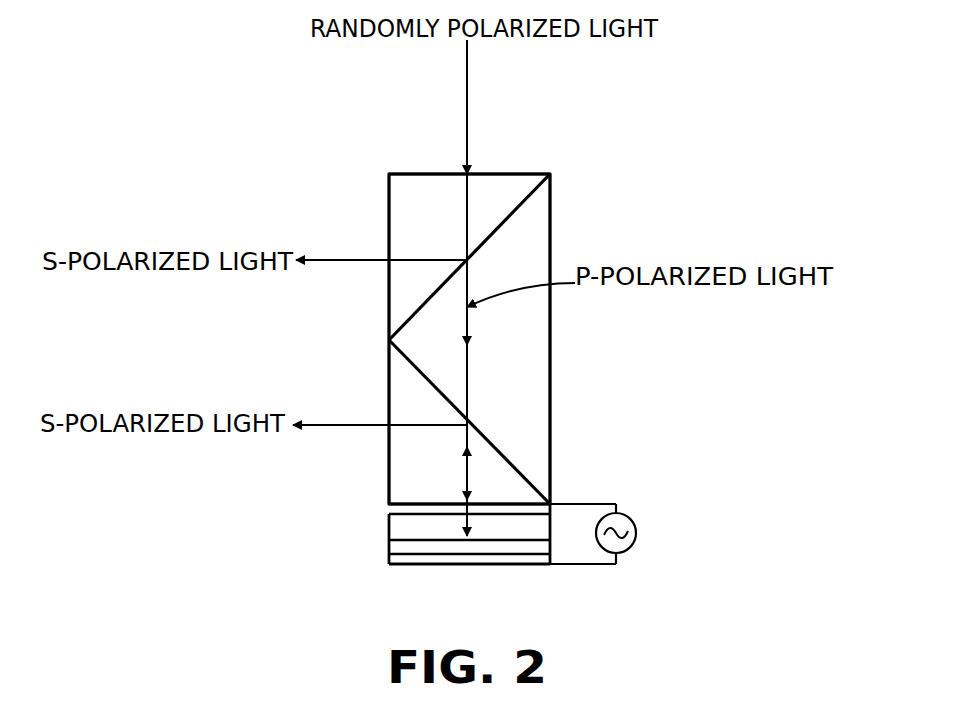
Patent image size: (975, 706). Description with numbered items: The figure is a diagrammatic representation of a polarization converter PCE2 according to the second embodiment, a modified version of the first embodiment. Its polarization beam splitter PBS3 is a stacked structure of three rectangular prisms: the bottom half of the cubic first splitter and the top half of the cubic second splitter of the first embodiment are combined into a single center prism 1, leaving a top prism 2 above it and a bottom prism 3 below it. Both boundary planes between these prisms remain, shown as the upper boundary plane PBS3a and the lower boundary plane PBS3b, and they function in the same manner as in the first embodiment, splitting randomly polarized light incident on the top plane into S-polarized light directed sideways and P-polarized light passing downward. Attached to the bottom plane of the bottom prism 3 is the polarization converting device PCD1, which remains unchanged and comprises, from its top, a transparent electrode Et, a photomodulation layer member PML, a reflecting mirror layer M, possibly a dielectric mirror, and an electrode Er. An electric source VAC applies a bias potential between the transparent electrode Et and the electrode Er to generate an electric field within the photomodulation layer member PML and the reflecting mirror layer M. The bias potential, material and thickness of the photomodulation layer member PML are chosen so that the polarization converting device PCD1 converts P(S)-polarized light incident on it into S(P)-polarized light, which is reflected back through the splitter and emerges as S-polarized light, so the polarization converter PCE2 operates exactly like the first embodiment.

The center prism 1 is at (528, 410).
The top prism 2 is at (404, 212).
The bottom prism 3 is at (404, 402).
The polarization beam splitter PBS3 is at (534, 300).
The boundary plane PBS3a is at (503, 228).
The boundary plane PBS3b is at (513, 468).
The polarization converter PCE2 is at (562, 203).
The transparent electrode Et is at (413, 503).
The photomodulation layer member PML is at (396, 527).
The reflecting mirror layer M is at (397, 547).
The electrode Er is at (450, 565).
The polarization converting device PCD1 is at (652, 529).
The electric source VAC is at (630, 550).